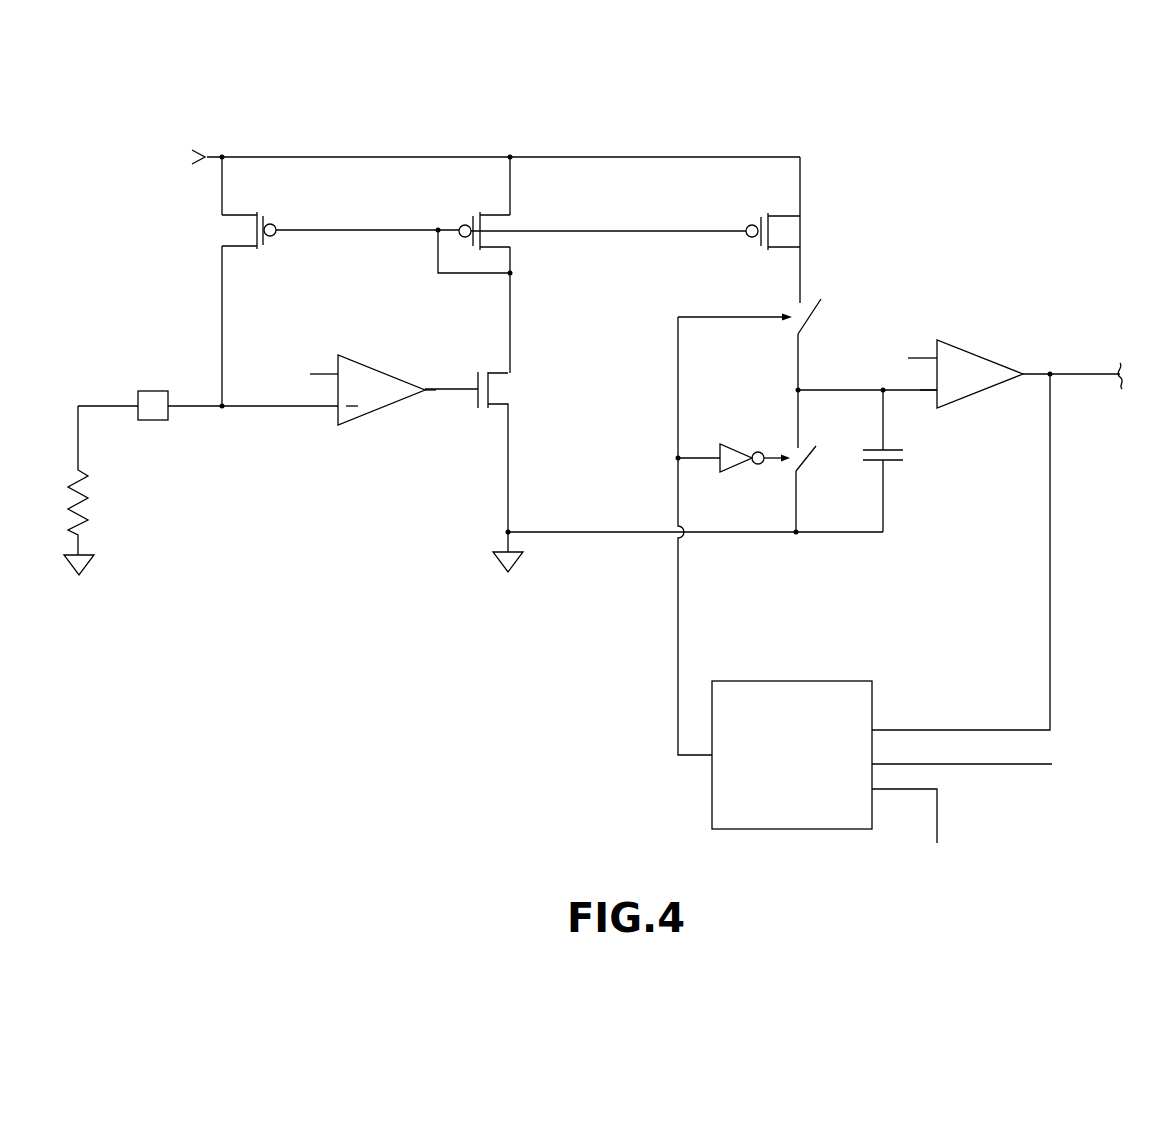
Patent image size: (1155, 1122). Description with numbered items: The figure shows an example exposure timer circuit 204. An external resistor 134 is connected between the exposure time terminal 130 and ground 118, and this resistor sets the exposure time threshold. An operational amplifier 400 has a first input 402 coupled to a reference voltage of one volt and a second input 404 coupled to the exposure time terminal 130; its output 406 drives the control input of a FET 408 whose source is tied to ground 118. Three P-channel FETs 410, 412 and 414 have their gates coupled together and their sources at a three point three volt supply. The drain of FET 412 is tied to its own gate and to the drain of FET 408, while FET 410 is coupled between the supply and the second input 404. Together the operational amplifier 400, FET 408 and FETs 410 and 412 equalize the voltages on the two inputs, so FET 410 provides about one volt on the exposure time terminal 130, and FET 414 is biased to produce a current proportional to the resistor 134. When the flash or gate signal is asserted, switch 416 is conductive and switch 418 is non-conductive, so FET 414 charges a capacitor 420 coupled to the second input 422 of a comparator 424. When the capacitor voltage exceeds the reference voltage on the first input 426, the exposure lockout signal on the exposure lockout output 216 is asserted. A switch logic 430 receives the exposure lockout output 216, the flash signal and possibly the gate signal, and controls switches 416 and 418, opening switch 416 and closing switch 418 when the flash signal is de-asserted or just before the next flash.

The exposure timer circuit 204 is at (180, 70).
The P-channel FET 410 is at (277, 205).
The P-channel FET 412 is at (522, 205).
The P-channel FET 414 is at (815, 228).
The electrically controlled switch 416 is at (830, 290).
The electrically controlled switch 418 is at (818, 485).
The capacitor 420 is at (887, 462).
The second input of comparator 422 is at (937, 408).
The comparator 424 is at (988, 358).
The first input of comparator 426 is at (937, 352).
The exposure lockout output 216 is at (1024, 373).
The exposure time terminal 130 is at (152, 391).
The resistor 134 is at (102, 502).
The operational amplifier 400 is at (380, 409).
The first input 402 is at (336, 373).
The second input 404 is at (338, 406).
The output 406 is at (427, 390).
The FET 408 is at (527, 386).
The ground 118 is at (521, 561).
The switch logic 430 is at (792, 830).